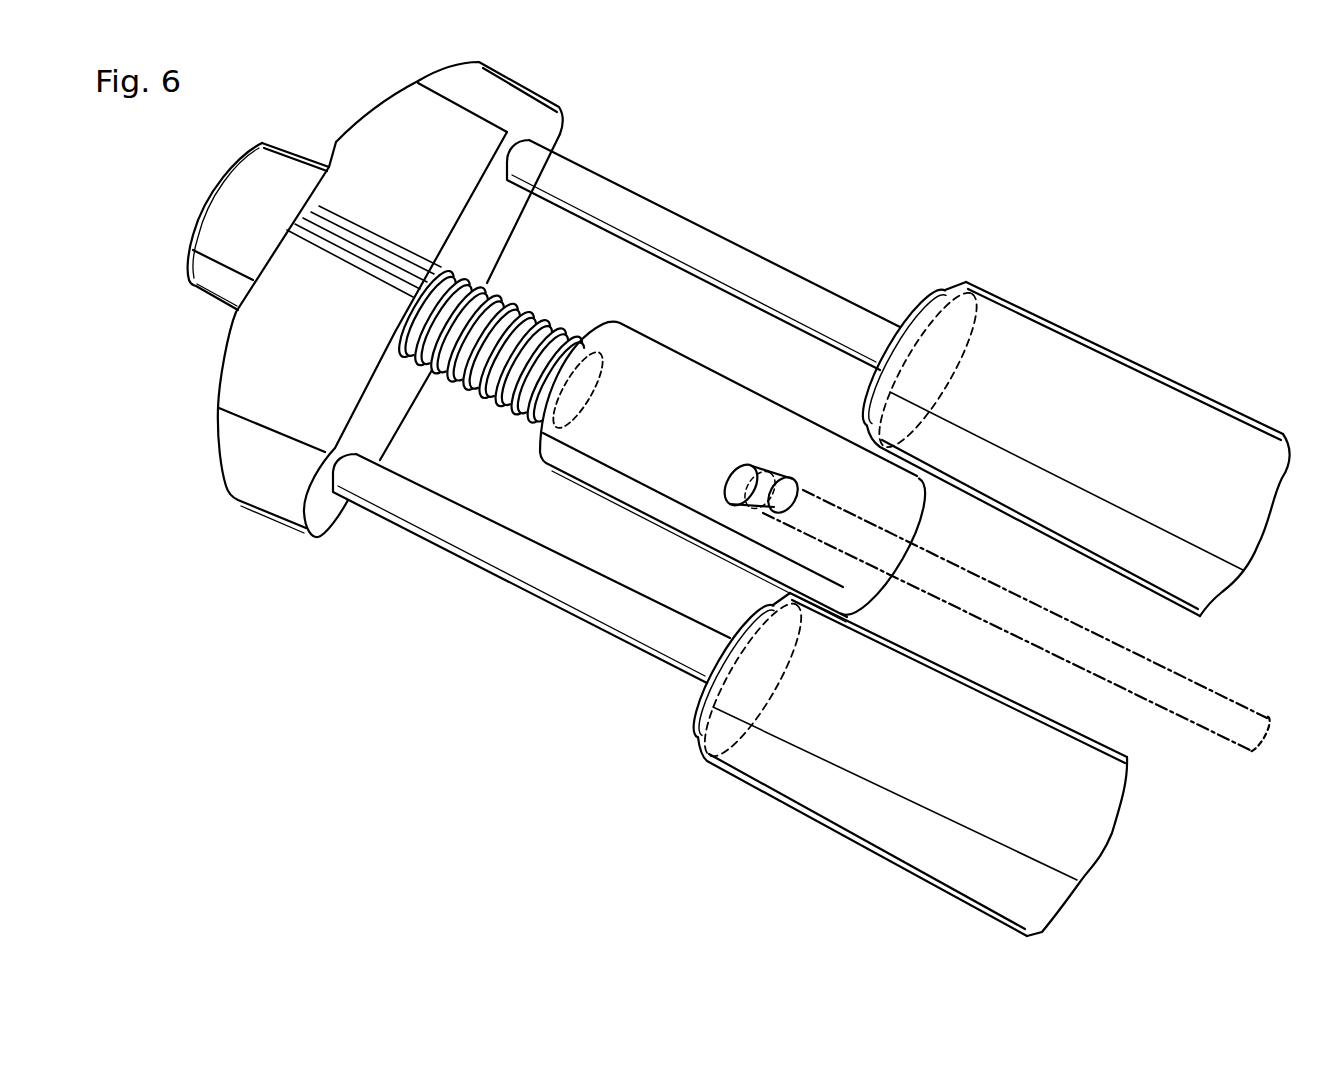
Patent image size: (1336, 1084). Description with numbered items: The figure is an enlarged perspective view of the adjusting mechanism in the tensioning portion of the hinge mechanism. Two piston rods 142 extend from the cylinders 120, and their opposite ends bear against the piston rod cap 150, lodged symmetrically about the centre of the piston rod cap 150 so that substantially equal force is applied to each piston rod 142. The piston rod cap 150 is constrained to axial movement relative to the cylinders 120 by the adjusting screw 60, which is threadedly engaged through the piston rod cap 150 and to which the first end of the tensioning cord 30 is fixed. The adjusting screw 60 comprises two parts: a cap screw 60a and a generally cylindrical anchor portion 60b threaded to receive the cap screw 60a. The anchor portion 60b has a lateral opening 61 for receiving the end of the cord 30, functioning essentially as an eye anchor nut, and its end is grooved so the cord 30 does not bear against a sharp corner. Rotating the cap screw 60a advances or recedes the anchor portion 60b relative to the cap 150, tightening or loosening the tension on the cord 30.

The piston rod cap 150 is at (433, 120).
The adjusting screw 60 is at (660, 305).
The cap screw 60a is at (268, 185).
The anchor portion 60b is at (737, 400).
The lateral opening 61 is at (783, 495).
The piston rod 142 is at (613, 193).
The cylinder 120 is at (1122, 370).
The tensioning cord 30 is at (1193, 680).